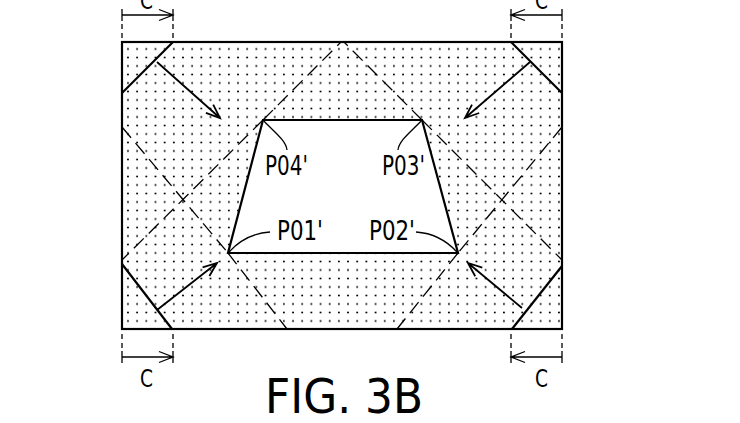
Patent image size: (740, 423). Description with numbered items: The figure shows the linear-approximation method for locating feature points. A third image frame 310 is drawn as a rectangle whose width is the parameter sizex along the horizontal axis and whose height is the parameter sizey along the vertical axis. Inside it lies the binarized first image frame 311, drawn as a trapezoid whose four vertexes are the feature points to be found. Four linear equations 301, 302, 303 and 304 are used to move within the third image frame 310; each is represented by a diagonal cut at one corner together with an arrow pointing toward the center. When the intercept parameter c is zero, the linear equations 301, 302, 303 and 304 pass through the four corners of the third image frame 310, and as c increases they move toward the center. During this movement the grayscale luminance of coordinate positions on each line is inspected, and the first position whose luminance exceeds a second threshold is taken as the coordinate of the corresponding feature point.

The linear equation 301 is at (143, 297).
The linear equation 302 is at (547, 292).
The linear equation 303 is at (140, 78).
The linear equation 304 is at (542, 80).
The third image frame 310 is at (562, 195).
The binarized first image frame 311 is at (436, 170).